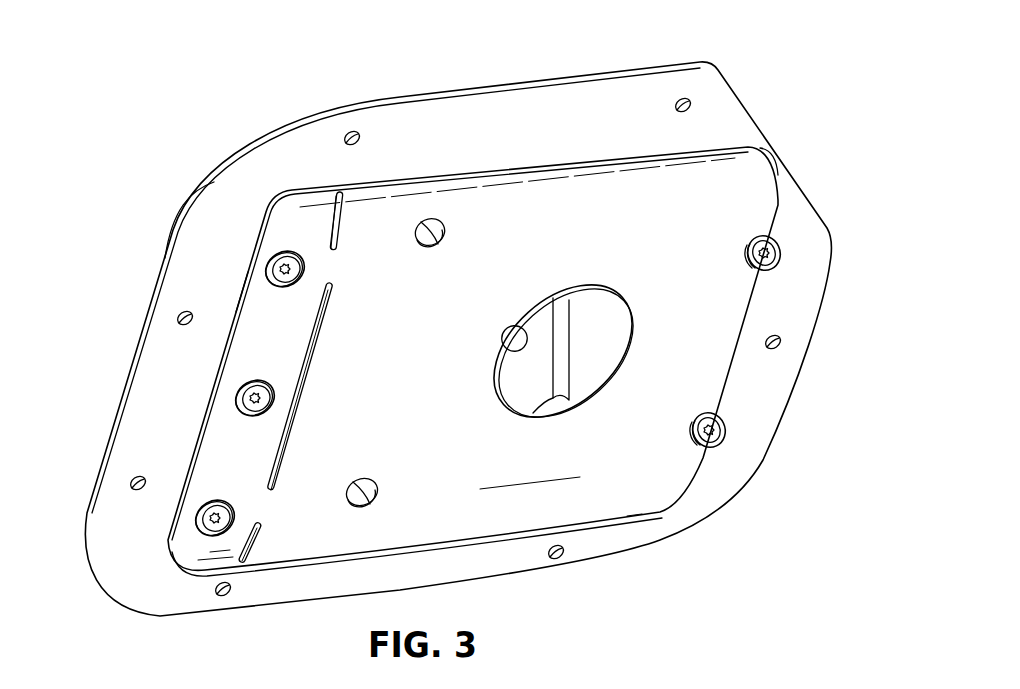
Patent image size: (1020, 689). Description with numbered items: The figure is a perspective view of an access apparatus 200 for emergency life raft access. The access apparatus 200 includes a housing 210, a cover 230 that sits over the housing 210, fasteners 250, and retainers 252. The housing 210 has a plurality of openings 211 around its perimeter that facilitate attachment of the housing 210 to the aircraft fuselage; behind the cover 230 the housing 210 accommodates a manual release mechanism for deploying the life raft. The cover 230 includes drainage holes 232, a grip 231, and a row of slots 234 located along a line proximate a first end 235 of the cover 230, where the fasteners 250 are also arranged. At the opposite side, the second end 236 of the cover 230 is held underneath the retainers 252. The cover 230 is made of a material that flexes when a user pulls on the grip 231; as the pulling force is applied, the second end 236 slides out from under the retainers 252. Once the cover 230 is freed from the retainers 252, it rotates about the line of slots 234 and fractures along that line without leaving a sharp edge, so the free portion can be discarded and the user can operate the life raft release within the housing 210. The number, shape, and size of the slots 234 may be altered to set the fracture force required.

The access apparatus 200 is at (170, 74).
The housing 210 is at (476, 80).
The openings 211 is at (352, 130).
The cover 230 is at (600, 498).
The grip 231 is at (608, 365).
The drainage holes 232 is at (446, 228).
The slots 234 is at (362, 255).
The first end 235 is at (228, 285).
The second end 236 is at (786, 165).
The fasteners 250 is at (280, 250).
The retainers 252 is at (772, 250).